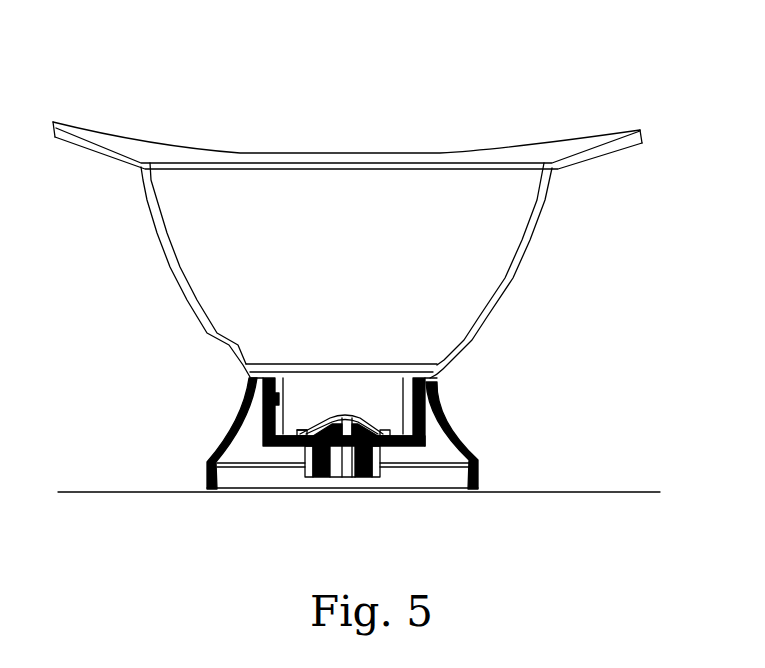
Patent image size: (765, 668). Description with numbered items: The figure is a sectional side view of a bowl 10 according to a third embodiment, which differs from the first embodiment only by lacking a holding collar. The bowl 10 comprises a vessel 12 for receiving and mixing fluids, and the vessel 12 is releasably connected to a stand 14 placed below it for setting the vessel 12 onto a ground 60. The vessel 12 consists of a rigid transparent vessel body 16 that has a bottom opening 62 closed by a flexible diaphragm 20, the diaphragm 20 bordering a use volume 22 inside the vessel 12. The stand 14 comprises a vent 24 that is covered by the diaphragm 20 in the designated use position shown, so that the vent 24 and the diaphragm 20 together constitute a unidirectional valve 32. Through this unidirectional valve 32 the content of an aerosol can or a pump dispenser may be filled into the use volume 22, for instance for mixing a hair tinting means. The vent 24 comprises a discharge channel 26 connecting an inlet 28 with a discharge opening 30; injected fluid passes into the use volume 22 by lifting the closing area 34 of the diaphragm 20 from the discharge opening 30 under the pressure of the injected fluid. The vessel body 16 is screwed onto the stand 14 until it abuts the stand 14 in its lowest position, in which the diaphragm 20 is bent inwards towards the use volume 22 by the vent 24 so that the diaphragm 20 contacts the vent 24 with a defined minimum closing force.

The bowl 10 is at (215, 105).
The vessel 12 is at (633, 232).
The stand 14 is at (235, 432).
The vessel body 16 is at (518, 256).
The diaphragm 20 is at (373, 427).
The use volume 22 is at (352, 268).
The vent 24 is at (428, 442).
The discharge channel 26 is at (313, 455).
The inlet 28 is at (343, 472).
The discharge opening 30 is at (311, 423).
The unidirectional valve 32 is at (628, 298).
The closing area 34 is at (340, 415).
The ground 60 is at (598, 491).
The bottom opening 62 is at (330, 418).